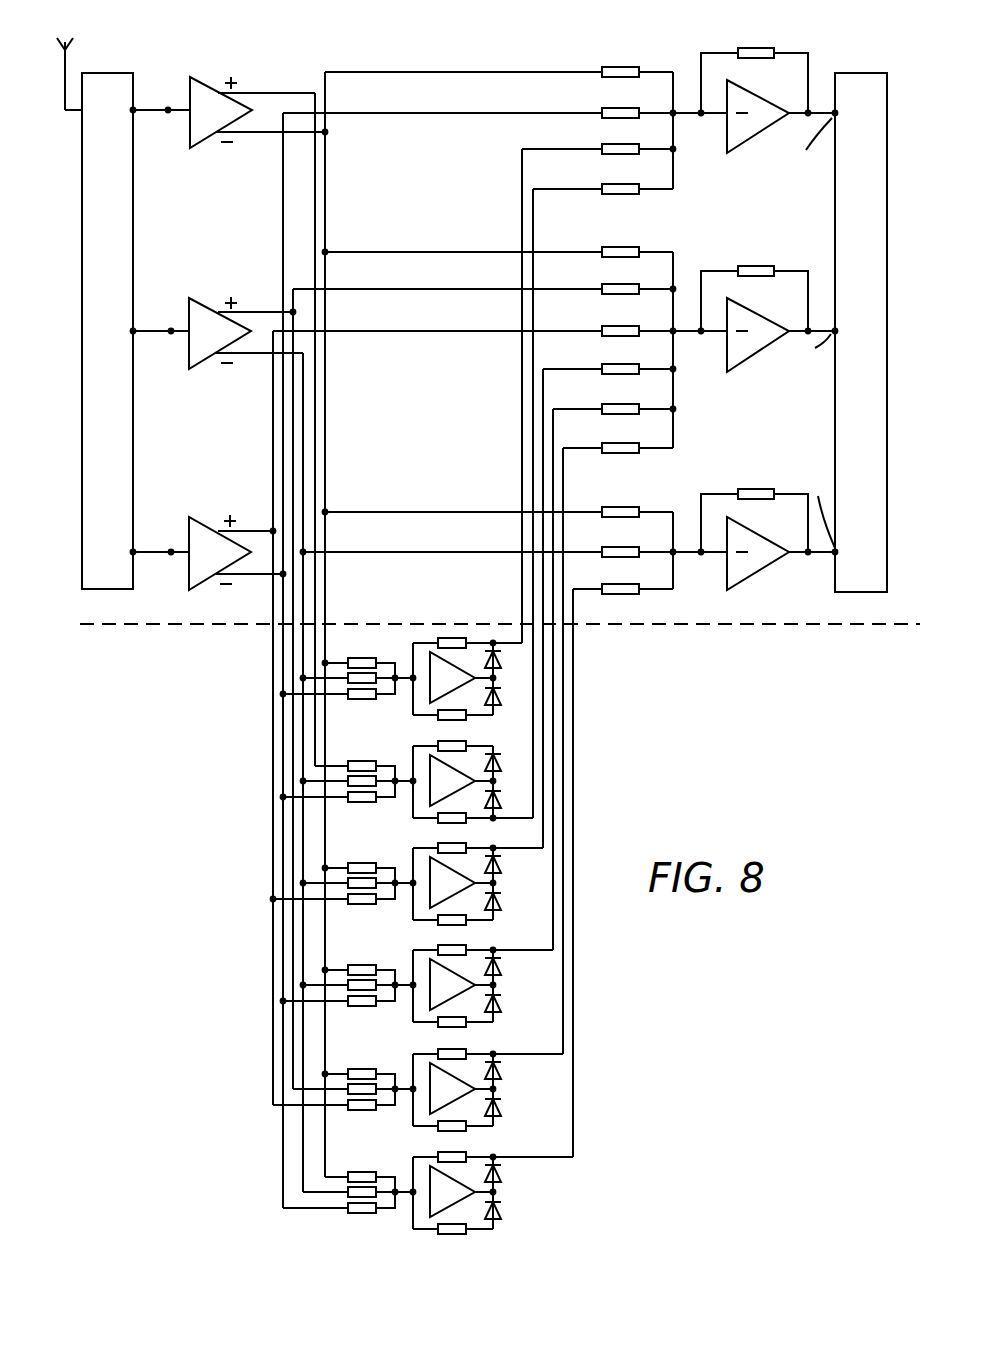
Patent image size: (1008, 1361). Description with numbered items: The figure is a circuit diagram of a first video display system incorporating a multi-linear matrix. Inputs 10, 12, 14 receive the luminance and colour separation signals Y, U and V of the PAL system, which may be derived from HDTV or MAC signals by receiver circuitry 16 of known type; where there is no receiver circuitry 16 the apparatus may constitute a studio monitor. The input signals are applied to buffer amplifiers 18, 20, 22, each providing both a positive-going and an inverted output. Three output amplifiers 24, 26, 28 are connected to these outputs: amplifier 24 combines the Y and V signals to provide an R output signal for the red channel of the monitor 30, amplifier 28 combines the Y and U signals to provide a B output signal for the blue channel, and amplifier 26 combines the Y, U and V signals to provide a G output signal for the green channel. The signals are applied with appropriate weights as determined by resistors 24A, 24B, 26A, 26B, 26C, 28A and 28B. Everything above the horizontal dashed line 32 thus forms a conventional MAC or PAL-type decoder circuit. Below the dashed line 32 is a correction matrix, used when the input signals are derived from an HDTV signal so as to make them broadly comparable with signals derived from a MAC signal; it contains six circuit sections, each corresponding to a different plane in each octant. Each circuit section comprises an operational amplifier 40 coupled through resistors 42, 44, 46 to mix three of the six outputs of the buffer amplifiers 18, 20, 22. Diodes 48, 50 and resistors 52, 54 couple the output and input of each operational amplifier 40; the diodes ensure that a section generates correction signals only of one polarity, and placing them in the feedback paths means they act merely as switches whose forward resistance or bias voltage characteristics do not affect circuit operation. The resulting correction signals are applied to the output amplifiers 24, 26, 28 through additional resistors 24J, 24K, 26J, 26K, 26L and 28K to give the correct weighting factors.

The input 10 is at (168, 107).
The input 12 is at (170, 325).
The input 14 is at (169, 545).
The receiver circuitry 16 is at (122, 73).
The buffer amplifier 18 is at (205, 82).
The buffer amplifier 20 is at (213, 307).
The buffer amplifier 22 is at (212, 525).
The output amplifier 24 is at (739, 147).
The resistor 24A is at (603, 67).
The resistor 24B is at (600, 107).
The additional resistor 24J is at (600, 144).
The additional resistor 24K is at (600, 184).
The output amplifier 26 is at (743, 363).
The resistor 26A is at (603, 247).
The resistor 26B is at (607, 284).
The resistor 26C is at (607, 326).
The additional resistor 26J is at (607, 364).
The additional resistor 26K is at (607, 404).
The additional resistor 26L is at (607, 443).
The output amplifier 28 is at (768, 547).
The resistor 28A is at (631, 507).
The resistor 28B is at (617, 552).
The resistor 28K is at (627, 595).
The monitor 30 is at (851, 73).
The horizontal dashed line 32 is at (610, 627).
The operational amplifier 40 is at (436, 1203).
The resistor 42 is at (365, 1172).
The resistor 44 is at (347, 1192).
The resistor 46 is at (363, 1212).
The diode 48 is at (502, 1172).
The diode 50 is at (497, 1208).
The resistor 52 is at (460, 1156).
The resistor 54 is at (449, 1233).